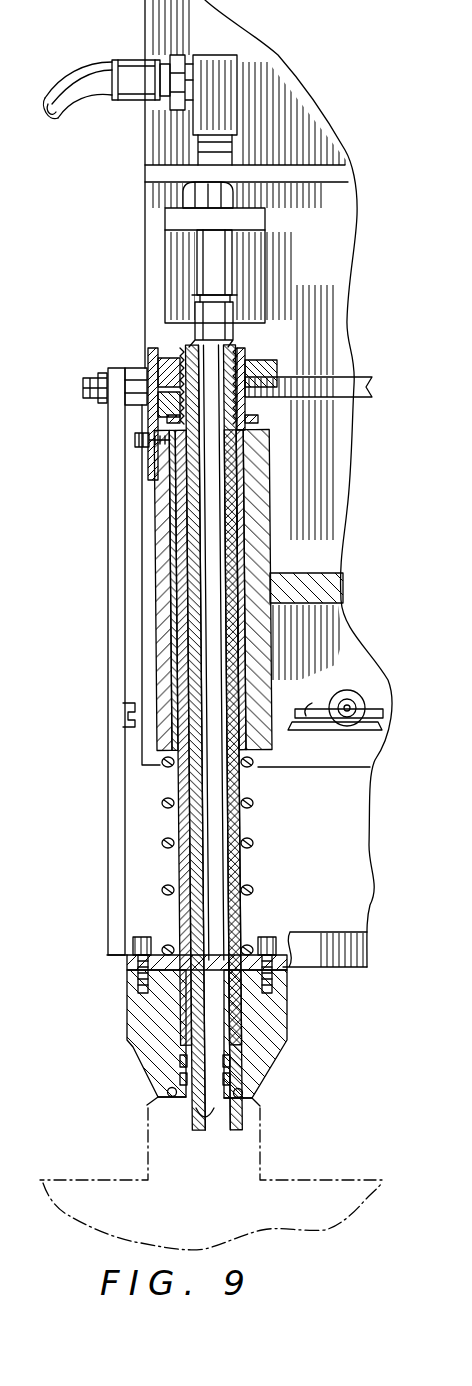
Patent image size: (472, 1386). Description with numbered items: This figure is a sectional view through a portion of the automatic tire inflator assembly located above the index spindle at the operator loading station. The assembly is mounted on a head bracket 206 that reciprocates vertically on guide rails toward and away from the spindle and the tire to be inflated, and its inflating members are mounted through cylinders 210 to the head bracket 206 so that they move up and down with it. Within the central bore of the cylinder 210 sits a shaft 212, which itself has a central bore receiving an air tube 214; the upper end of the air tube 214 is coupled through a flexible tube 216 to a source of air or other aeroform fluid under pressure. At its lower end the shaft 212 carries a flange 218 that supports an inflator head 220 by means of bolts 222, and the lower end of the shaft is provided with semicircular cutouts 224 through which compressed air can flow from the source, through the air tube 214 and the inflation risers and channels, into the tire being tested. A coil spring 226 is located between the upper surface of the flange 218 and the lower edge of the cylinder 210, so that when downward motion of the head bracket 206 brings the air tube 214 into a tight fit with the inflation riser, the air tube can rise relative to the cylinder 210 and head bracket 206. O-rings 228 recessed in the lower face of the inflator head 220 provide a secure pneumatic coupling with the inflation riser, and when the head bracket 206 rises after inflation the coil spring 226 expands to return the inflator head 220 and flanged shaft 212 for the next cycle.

The head bracket 206 is at (115, 450).
The cylinder 210 is at (276, 450).
The shaft 212 is at (292, 531).
The air tube 214 is at (186, 1109).
The flexible tube 216 is at (95, 72).
The flange 218 is at (127, 966).
The inflator head 220 is at (126, 1013).
The bolt 222 is at (138, 980).
The semicircular cutout 224 is at (207, 1122).
The coil spring 226 is at (254, 808).
The O-ring 228 is at (170, 1082).